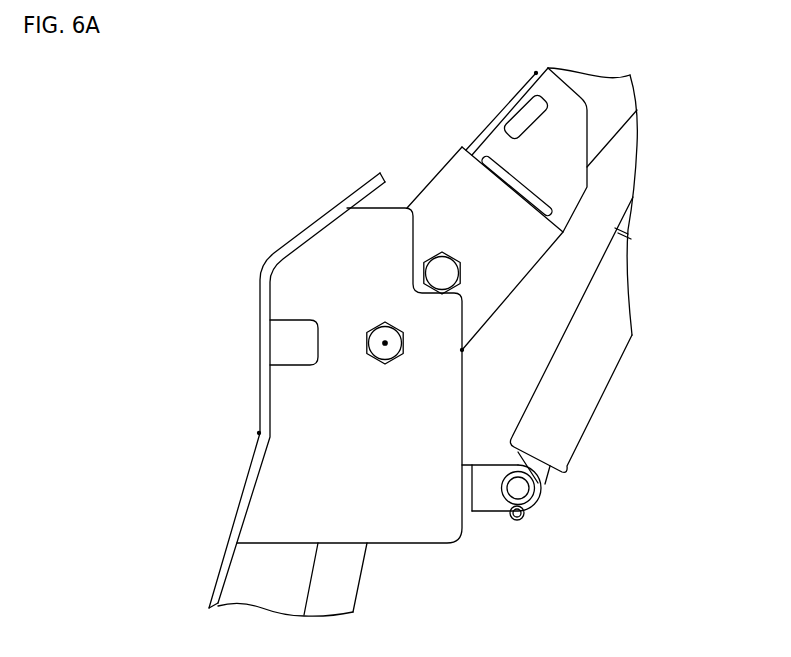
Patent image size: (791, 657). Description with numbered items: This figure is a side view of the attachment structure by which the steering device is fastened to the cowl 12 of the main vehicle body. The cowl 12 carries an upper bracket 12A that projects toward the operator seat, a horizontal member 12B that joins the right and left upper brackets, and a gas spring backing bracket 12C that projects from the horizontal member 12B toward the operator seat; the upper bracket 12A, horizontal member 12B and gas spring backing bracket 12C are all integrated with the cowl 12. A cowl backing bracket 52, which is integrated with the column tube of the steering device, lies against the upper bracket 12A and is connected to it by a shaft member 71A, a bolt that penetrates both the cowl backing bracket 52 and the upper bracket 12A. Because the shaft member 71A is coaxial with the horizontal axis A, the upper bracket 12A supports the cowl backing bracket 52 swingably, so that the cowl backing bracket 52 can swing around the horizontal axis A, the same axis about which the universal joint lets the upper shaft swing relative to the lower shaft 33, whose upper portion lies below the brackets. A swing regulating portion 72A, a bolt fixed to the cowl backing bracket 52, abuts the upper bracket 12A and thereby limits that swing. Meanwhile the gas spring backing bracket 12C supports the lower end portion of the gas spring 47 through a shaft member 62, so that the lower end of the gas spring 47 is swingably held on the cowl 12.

The cowl 12 is at (258, 373).
The upper bracket 12A is at (413, 527).
The horizontal member 12B is at (468, 465).
The gas spring backing bracket 12C is at (495, 498).
The lower shaft 33 is at (325, 569).
The gas spring 47 is at (604, 403).
The cowl backing bracket 52 is at (482, 315).
The shaft member 62 is at (528, 497).
The shaft member 71A is at (385, 364).
The swing regulating portion 72A is at (438, 252).
The horizontal axis A is at (382, 343).